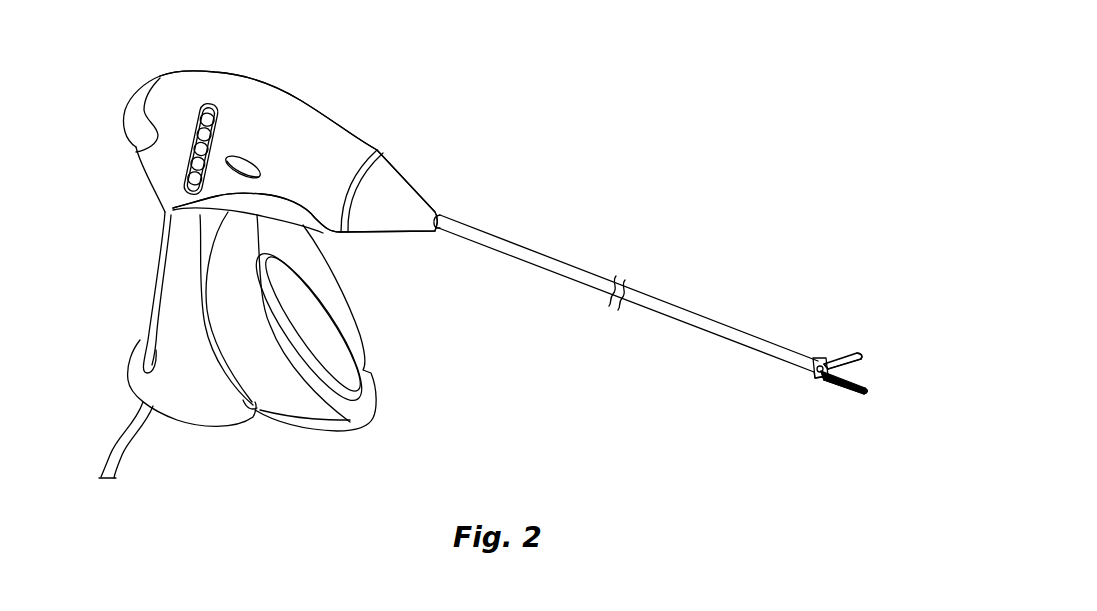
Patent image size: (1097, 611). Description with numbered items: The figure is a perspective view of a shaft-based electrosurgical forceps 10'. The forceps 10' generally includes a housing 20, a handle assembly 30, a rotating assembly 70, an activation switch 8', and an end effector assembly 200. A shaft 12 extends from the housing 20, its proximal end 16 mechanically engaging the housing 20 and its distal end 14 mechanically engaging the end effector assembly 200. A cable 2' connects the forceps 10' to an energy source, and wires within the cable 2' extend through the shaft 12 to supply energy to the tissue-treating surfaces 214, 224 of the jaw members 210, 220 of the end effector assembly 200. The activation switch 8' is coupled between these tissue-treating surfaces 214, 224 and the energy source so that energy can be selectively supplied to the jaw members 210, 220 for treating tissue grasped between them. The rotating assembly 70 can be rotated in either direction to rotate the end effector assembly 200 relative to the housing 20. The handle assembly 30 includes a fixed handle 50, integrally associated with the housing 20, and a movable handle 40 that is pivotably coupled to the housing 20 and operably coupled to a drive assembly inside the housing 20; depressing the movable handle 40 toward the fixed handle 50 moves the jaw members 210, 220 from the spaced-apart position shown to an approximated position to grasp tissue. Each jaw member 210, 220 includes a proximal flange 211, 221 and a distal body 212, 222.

The forceps 10' is at (299, 125).
The housing 20 is at (205, 72).
The rotating assembly 70 is at (213, 106).
The activation switch 8' is at (117, 114).
The handle assembly 30 is at (387, 466).
The fixed handle 50 is at (167, 340).
The movable handle 40 is at (363, 357).
The cable 2' is at (105, 440).
The shaft 12 is at (665, 313).
The proximal end 16 is at (438, 216).
The distal end 14 is at (807, 372).
The end effector assembly 200 is at (833, 302).
The jaw member 210 is at (879, 353).
The proximal flange 211 is at (823, 363).
The distal body 212 is at (857, 352).
The tissue-treating surface 214 is at (862, 360).
The jaw member 220 is at (845, 404).
The proximal flange 221 is at (821, 376).
The distal body 222 is at (868, 395).
The tissue-treating surface 224 is at (868, 384).